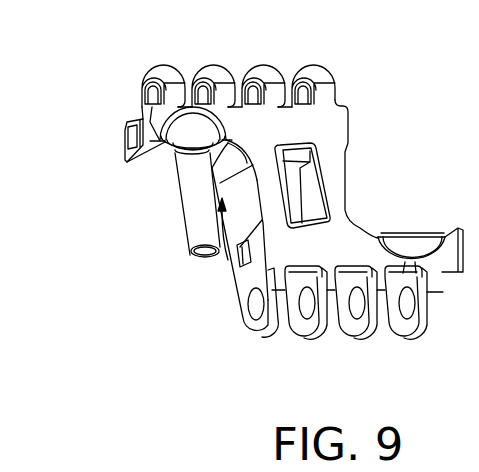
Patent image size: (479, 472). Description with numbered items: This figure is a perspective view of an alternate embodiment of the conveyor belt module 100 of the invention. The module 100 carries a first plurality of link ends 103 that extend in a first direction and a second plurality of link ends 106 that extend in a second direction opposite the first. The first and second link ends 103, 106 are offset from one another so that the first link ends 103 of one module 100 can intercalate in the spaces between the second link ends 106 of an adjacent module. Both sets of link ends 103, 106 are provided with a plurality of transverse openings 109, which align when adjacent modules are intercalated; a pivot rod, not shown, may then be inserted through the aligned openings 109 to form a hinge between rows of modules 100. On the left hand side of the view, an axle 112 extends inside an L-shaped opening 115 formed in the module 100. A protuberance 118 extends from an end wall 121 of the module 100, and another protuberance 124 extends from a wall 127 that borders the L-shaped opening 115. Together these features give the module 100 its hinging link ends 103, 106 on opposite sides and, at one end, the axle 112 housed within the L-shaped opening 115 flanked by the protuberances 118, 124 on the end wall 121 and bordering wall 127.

The module 100 is at (330, 127).
The first plurality of link ends 103 is at (322, 70).
The second plurality of link ends 106 is at (328, 336).
The transverse openings 109 is at (258, 301).
The axle 112 is at (200, 210).
The L-shaped opening 115 is at (228, 260).
The protuberance 118 is at (128, 137).
The end wall 121 is at (137, 126).
The protuberance 124 is at (238, 266).
The wall 127 is at (237, 280).